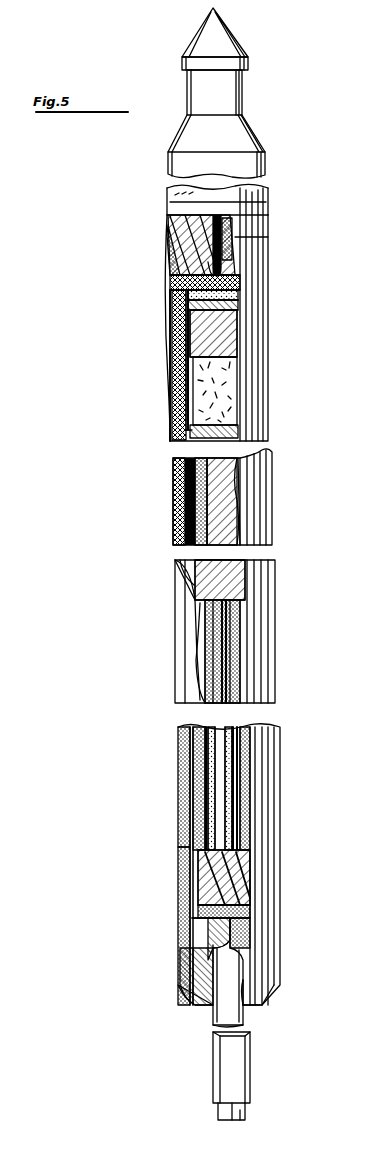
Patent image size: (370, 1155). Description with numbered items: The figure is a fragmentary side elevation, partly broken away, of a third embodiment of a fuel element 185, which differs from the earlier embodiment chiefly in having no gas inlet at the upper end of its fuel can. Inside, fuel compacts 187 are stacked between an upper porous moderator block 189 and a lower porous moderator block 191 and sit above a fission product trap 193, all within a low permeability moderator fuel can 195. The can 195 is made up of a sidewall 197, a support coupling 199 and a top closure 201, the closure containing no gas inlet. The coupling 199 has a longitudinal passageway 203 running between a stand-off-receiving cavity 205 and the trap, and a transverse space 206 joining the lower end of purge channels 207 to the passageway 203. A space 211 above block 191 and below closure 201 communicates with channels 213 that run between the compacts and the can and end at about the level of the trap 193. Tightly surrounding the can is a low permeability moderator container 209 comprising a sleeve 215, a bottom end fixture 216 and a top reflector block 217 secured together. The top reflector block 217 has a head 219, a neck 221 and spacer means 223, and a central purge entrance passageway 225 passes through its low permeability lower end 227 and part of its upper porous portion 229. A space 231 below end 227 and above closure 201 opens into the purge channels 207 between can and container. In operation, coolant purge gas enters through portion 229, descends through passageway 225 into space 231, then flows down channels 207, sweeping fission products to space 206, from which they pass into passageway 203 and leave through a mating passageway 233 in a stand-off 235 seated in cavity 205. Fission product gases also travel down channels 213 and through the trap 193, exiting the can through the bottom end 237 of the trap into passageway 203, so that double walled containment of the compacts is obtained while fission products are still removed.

The head 219 is at (244, 38).
The neck 221 is at (240, 89).
The fuel element 185 is at (228, 107).
The central purge entrance passageway 225 is at (228, 226).
The spacer means 223 is at (267, 238).
The top reflector block 217 is at (188, 233).
The upper porous portion 229 is at (180, 249).
The low permeability lower end 227 is at (177, 263).
The space 231 is at (175, 288).
The top closure 201 is at (240, 295).
The space 211 is at (240, 308).
The sleeve 215 is at (188, 323).
The channels 213 is at (172, 368).
The porous moderator block 191 is at (227, 336).
The fuel compacts 187 is at (233, 387).
The sidewall 197 is at (177, 470).
The fuel can 195 is at (177, 495).
The porous moderator block 189 is at (240, 577).
The fission product trap 193 is at (233, 643).
The low permeability moderator container 209 is at (183, 763).
The purge channels 207 is at (183, 818).
The bottom end of the trap 237 is at (182, 873).
The transverse space 206 is at (188, 920).
The support coupling 199 is at (187, 935).
The stand-off-receiving cavity 205 is at (185, 947).
The longitudinal passageway 203 is at (247, 929).
The bottom end fixture 216 is at (190, 995).
The mating passageway 233 is at (237, 1032).
The stand-off 235 is at (250, 1072).